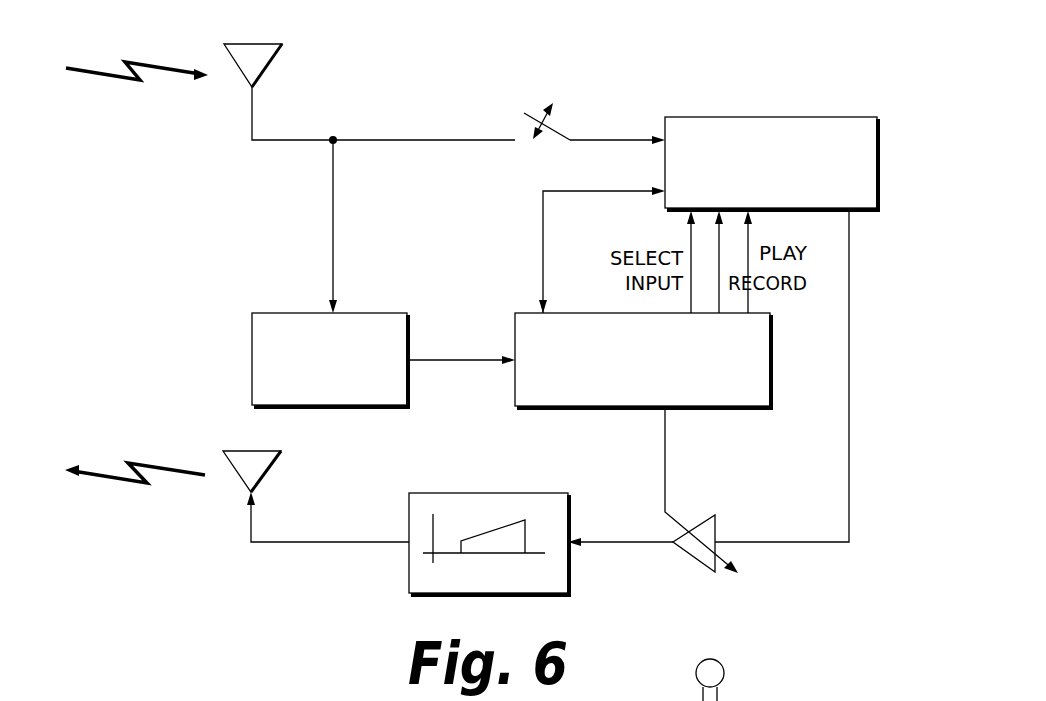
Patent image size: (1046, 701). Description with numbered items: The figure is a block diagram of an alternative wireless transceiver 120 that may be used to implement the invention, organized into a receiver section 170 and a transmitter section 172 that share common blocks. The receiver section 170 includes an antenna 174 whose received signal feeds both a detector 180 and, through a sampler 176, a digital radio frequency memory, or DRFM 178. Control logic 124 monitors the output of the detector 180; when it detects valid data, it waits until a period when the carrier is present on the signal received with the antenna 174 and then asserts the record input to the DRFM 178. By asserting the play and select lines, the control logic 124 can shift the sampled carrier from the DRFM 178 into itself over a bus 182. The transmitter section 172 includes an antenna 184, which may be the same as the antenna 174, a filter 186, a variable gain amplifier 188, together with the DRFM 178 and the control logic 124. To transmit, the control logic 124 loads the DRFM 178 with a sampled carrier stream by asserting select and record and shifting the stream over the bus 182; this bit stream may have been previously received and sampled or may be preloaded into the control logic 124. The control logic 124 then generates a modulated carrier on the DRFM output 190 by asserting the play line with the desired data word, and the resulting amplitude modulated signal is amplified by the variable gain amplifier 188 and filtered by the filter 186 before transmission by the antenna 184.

The wireless transceiver 120 is at (836, 52).
The control logic 124 is at (737, 409).
The receiver section 170 is at (158, 131).
The transmitter section 172 is at (158, 530).
The antenna 174 is at (272, 68).
The sampler 176 is at (531, 115).
The digital radio frequency memory (DRFM) 178 is at (836, 117).
The detector 180 is at (367, 313).
The bus 182 is at (543, 226).
The antenna 184 is at (270, 476).
The filter 186 is at (503, 493).
The variable gain amplifier 188 is at (690, 558).
The DRFM output 190 is at (849, 370).